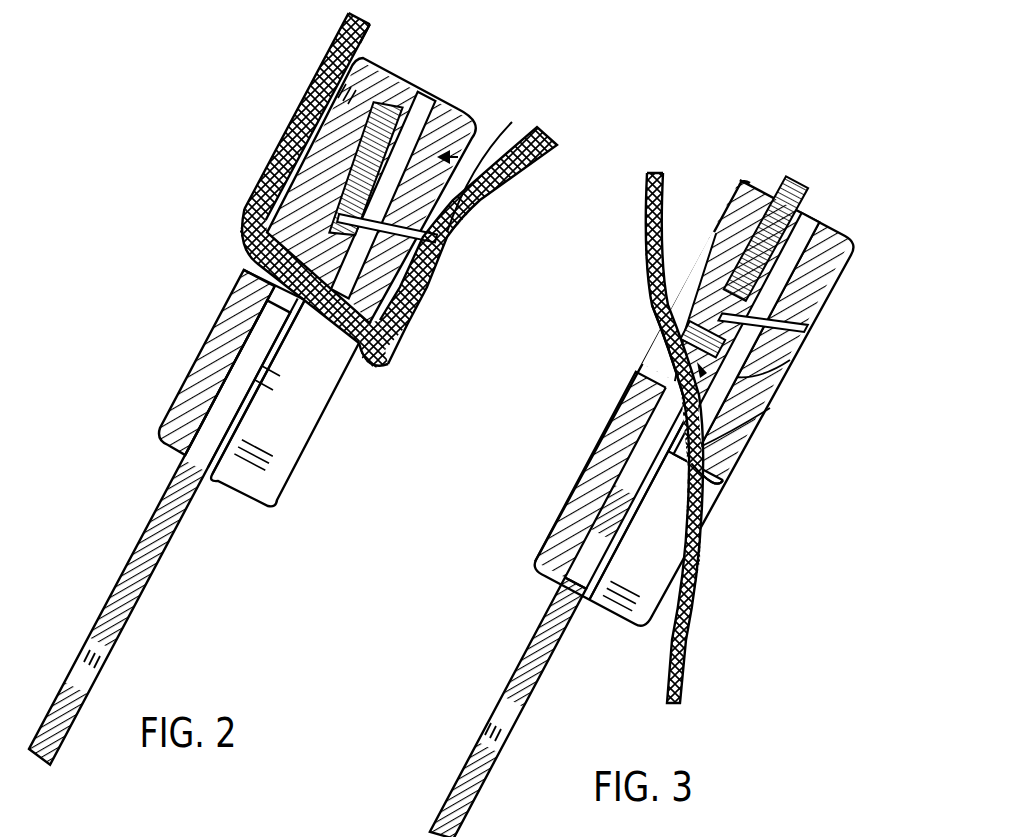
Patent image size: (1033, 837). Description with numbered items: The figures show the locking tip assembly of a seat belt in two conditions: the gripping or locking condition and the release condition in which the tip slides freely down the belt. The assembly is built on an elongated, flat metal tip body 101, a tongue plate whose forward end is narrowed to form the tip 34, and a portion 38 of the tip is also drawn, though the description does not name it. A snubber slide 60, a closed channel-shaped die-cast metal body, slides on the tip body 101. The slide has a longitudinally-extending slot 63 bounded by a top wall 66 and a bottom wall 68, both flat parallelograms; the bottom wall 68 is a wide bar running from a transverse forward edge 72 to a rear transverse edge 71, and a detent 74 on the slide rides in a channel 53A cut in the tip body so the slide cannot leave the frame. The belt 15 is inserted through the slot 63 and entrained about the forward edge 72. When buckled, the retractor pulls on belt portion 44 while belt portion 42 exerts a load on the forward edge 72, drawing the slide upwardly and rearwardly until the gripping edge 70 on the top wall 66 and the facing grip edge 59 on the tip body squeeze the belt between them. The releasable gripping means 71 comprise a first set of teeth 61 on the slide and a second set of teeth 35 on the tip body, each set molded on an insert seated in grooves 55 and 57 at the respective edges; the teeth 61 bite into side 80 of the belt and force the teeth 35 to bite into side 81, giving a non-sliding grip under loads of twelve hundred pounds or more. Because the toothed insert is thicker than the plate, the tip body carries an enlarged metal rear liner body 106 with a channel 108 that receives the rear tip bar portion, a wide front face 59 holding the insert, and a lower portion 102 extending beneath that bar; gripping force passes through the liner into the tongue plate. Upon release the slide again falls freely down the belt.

In FIG. 2, the belt 15 is at (279, 122).
In FIG. 2, the tip 34 is at (165, 557).
In FIG. 3, the tip 34 is at (553, 653).
In FIG. 3, the second set of teeth 35 is at (767, 412).
In FIG. 2, the needle shaft break 38 is at (114, 636).
In FIG. 3, the needle shaft break 38 is at (524, 712).
In FIG. 2, the belt portion 42 is at (488, 200).
In FIG. 3, the belt portion 42 is at (688, 628).
In FIG. 3, the belt portion 44 is at (662, 203).
In FIG. 3, the channel 53A is at (600, 455).
In FIG. 3, the slot 55 is at (663, 286).
In FIG. 3, the groove 57 is at (613, 431).
In FIG. 2, the grip edge 59 is at (257, 212).
In FIG. 3, the grip edge 59 is at (663, 309).
In FIG. 2, the snubber slide 60 is at (310, 463).
In FIG. 3, the snubber slide 60 is at (710, 541).
In FIG. 2, the first set of teeth 61 is at (232, 308).
In FIG. 3, the first set of teeth 61 is at (637, 371).
In FIG. 3, the slot 63 is at (661, 361).
In FIG. 2, the top wall 66 is at (180, 400).
In FIG. 3, the top wall 66 is at (528, 553).
In FIG. 2, the bottom wall 68 is at (492, 163).
In FIG. 2, the gripping edge 70 is at (262, 249).
In FIG. 2, the rear transverse edge 71 is at (465, 110).
In FIG. 3, the rear transverse edge 71 is at (845, 238).
In FIG. 2, the forward edge 72 is at (388, 332).
In FIG. 3, the forward edge 72 is at (730, 491).
In FIG. 3, the detent 74 is at (659, 508).
In FIG. 2, the side of belt 80 is at (354, 29).
In FIG. 2, the side of belt 81 is at (378, 38).
In FIG. 2, the tip body 101 is at (417, 77).
In FIG. 3, the tip body 101 is at (800, 178).
In FIG. 2, the lower portion 102 is at (432, 238).
In FIG. 3, the lower portion 102 is at (810, 328).
In FIG. 2, the rear liner body 106 is at (262, 188).
In FIG. 3, the rear liner body 106 is at (678, 286).
In FIG. 3, the channel 108 is at (790, 360).